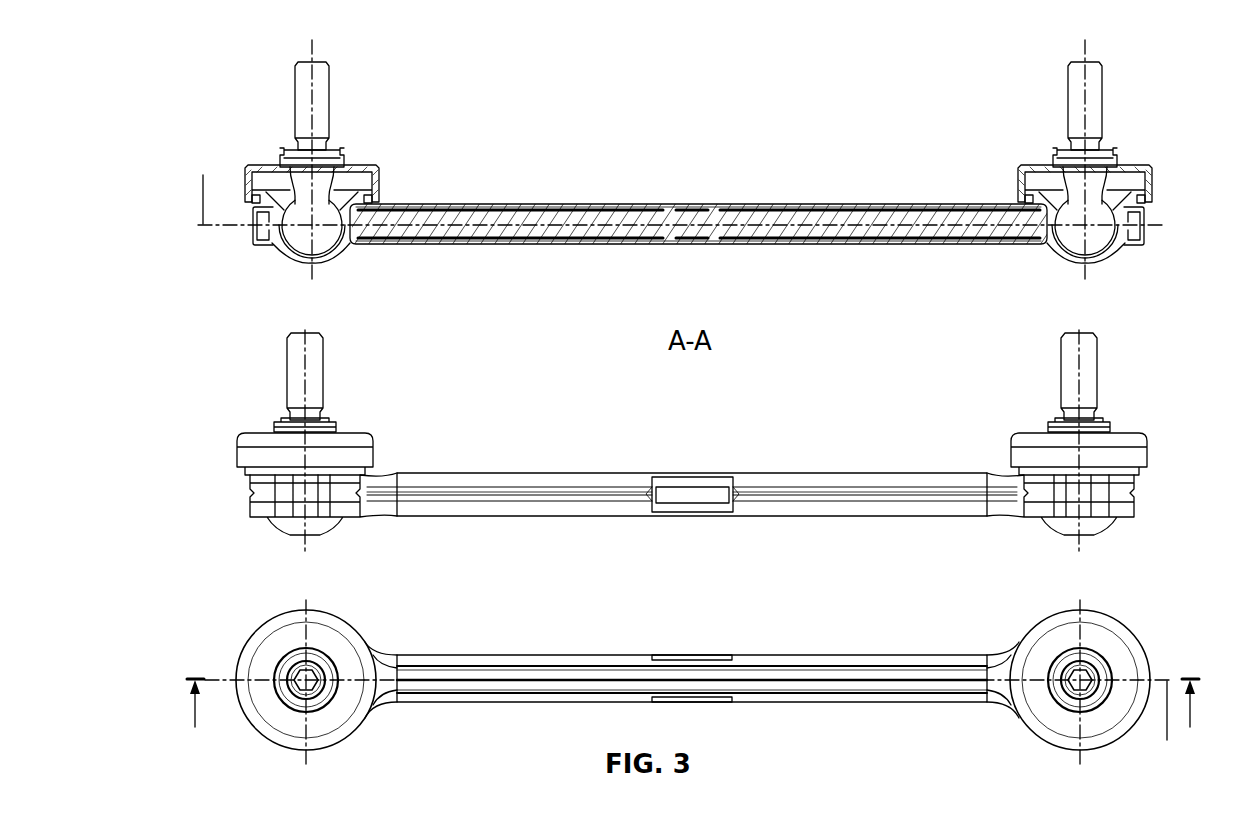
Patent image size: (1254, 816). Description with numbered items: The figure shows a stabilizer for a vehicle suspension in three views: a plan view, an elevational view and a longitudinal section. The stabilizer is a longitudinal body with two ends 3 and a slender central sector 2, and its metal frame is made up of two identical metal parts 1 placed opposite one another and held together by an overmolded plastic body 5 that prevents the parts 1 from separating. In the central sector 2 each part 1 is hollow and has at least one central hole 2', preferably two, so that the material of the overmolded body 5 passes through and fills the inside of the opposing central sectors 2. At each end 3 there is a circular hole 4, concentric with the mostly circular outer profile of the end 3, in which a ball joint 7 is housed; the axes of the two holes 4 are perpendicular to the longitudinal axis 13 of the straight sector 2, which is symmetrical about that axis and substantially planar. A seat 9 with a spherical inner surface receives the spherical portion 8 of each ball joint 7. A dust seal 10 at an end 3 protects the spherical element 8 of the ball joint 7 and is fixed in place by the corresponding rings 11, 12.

The metal part 1 is at (514, 200).
The central sector 2 is at (699, 219).
The central hole 2' is at (699, 219).
The end 3 is at (262, 244).
The hole 4 is at (283, 233).
The overmolded plastic body 5 is at (917, 228).
The ball joint 7 is at (333, 182).
The spherical portion 8 is at (327, 233).
The seat 9 is at (311, 249).
The dust seal 10 is at (268, 166).
The ring 11 is at (252, 207).
The ring 12 is at (344, 163).
The longitudinal axis 13 is at (691, 460).